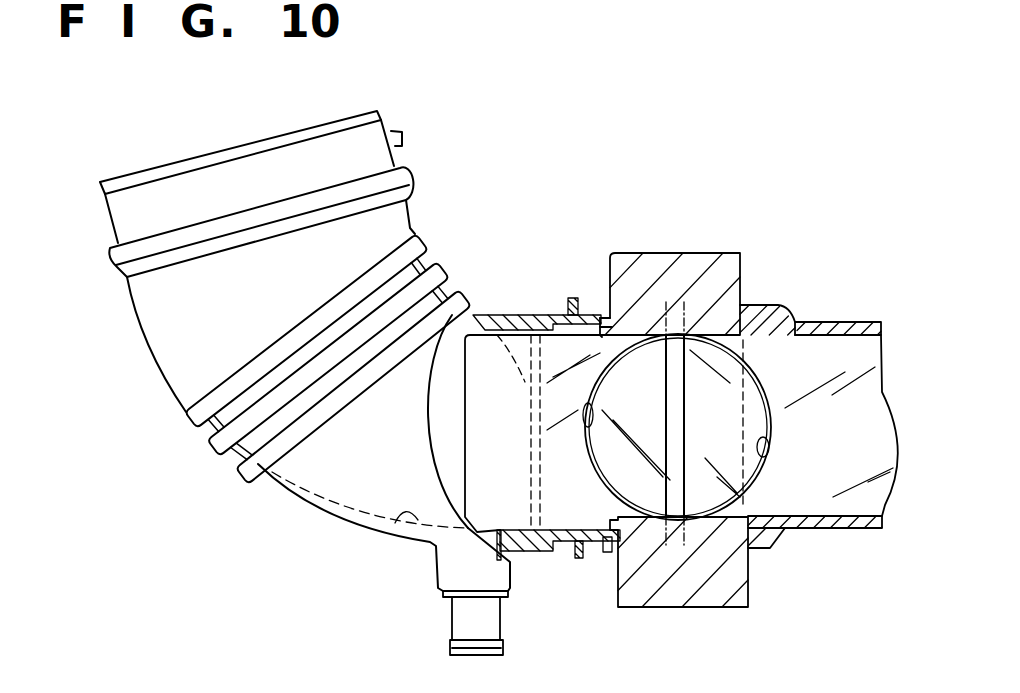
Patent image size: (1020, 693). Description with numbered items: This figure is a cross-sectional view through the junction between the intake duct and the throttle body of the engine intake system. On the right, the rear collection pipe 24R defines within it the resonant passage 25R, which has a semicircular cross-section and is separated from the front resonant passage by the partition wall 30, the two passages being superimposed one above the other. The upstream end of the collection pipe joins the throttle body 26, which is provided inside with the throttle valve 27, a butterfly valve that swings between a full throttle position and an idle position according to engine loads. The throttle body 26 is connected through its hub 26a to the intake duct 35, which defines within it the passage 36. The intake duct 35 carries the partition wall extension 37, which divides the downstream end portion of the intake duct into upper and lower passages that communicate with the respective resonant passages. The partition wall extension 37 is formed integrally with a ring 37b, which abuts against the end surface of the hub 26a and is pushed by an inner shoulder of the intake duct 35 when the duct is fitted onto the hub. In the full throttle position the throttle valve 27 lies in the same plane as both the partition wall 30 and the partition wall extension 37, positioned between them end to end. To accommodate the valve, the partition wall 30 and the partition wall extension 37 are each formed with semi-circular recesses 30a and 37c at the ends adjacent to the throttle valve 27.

The rear collection pipe 24R is at (855, 322).
The resonant passage 25R is at (806, 342).
The throttle body 26 is at (707, 253).
The hub 26a is at (600, 316).
The throttle valve 27 is at (770, 547).
The partition wall 30 is at (825, 458).
The semi-circular recess 30a is at (758, 438).
The intake duct 35 is at (317, 517).
The passage 36 is at (387, 532).
The partition wall extension 37 is at (506, 422).
The ring 37b is at (493, 322).
The semi-circular recess 37c is at (533, 438).